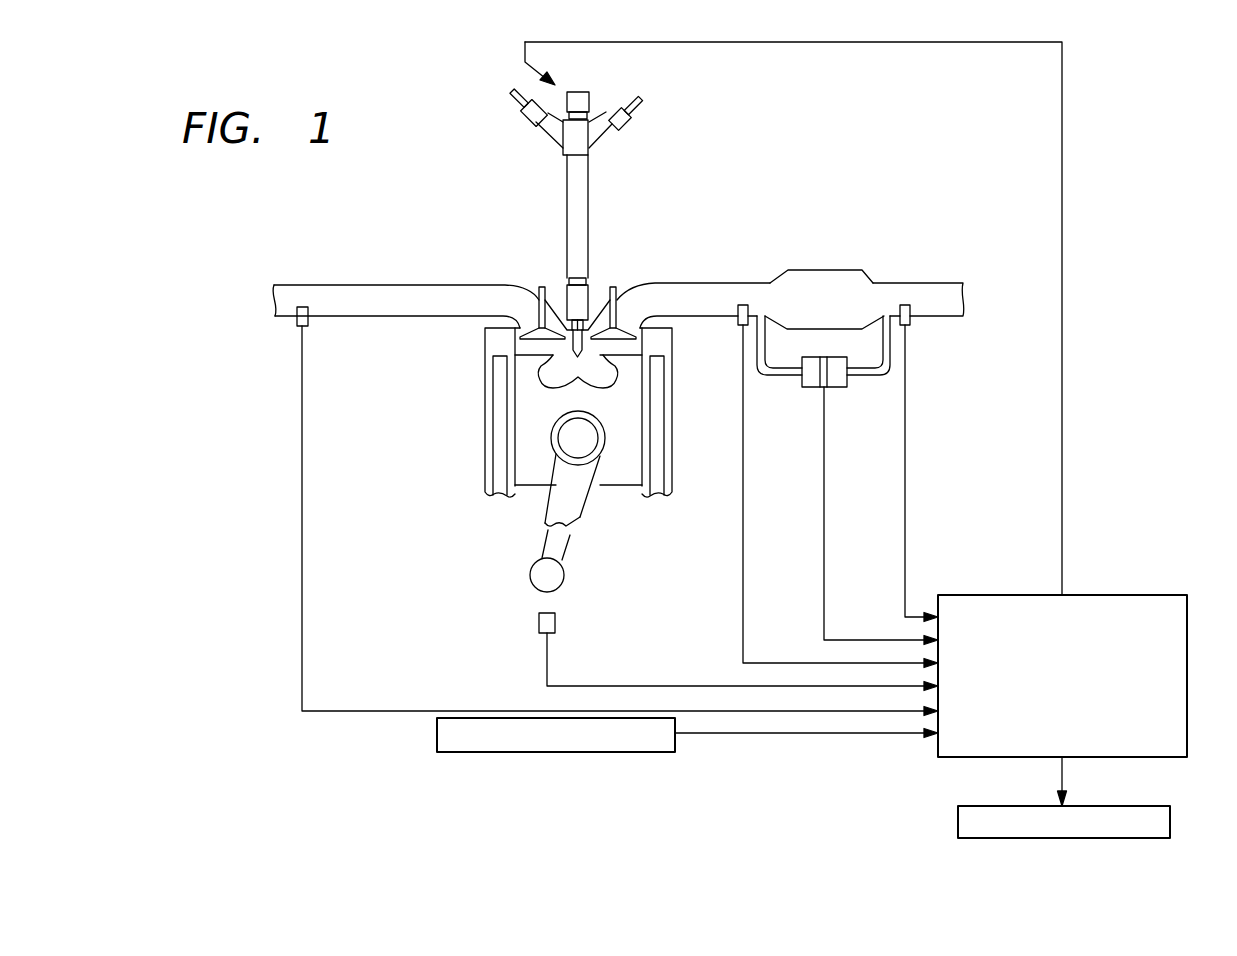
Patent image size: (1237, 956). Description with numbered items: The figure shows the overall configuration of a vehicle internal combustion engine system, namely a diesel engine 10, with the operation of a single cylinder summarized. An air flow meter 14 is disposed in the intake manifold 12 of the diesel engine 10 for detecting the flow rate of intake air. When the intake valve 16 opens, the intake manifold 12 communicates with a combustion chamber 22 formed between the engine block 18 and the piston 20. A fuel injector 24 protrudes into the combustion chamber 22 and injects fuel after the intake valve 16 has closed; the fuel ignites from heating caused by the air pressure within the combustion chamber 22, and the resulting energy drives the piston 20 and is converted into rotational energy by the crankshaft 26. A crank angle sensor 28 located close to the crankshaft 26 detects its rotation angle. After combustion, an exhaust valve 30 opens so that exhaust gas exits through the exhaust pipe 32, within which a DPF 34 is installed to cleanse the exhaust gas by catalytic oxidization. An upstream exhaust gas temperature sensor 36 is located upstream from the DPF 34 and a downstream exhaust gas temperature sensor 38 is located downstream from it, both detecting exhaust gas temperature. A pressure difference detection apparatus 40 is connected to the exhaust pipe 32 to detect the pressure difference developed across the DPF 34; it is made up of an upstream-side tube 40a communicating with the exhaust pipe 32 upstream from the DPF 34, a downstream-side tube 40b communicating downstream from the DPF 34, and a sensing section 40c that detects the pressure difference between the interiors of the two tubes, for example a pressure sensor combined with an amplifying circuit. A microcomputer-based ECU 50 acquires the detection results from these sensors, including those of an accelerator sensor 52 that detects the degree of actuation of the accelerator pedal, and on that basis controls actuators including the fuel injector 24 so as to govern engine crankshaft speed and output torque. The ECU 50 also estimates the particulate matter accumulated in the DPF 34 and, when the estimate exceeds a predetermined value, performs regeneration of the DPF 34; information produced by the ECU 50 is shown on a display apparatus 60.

The diesel engine 10 is at (731, 196).
The intake manifold 12 is at (378, 317).
The air flow meter 14 is at (297, 322).
The intake valve 16 is at (541, 287).
The engine block 18 is at (485, 466).
The piston 20 is at (612, 486).
The combustion chamber 22 is at (648, 349).
The fuel injector 24 is at (588, 190).
The crankshaft 26 is at (564, 572).
The crank angle sensor 28 is at (555, 622).
The exhaust valve 30 is at (613, 287).
The exhaust pipe 32 is at (708, 284).
The DPF 34 is at (826, 270).
The upstream exhaust gas temperature sensor 36 is at (737, 324).
The downstream exhaust gas temperature sensor 38 is at (910, 325).
The pressure difference detection apparatus 40 is at (836, 400).
The upstream-side tube 40a is at (777, 376).
The downstream-side tube 40b is at (870, 376).
The sensing section 40c is at (808, 388).
The ECU 50 is at (1118, 595).
The accelerator sensor 52 is at (437, 735).
The display apparatus 60 is at (1170, 822).